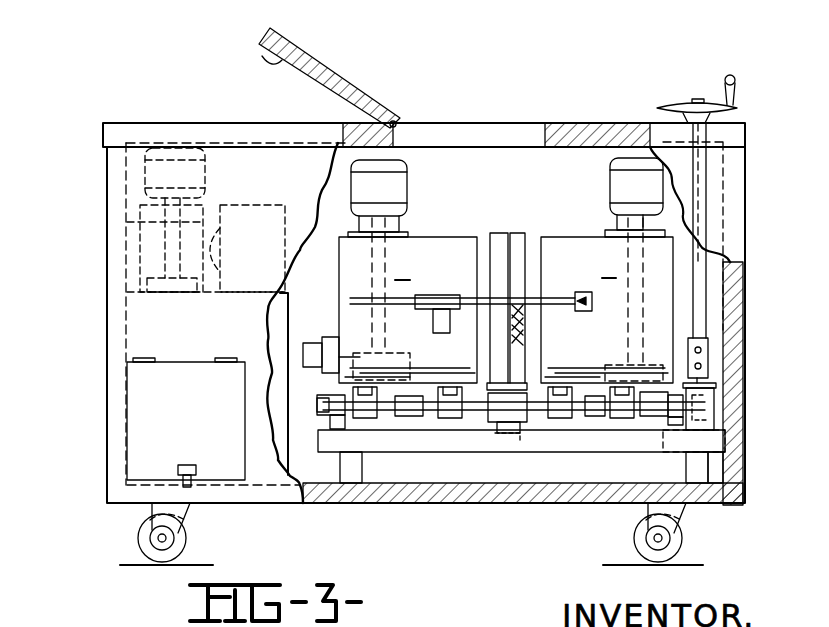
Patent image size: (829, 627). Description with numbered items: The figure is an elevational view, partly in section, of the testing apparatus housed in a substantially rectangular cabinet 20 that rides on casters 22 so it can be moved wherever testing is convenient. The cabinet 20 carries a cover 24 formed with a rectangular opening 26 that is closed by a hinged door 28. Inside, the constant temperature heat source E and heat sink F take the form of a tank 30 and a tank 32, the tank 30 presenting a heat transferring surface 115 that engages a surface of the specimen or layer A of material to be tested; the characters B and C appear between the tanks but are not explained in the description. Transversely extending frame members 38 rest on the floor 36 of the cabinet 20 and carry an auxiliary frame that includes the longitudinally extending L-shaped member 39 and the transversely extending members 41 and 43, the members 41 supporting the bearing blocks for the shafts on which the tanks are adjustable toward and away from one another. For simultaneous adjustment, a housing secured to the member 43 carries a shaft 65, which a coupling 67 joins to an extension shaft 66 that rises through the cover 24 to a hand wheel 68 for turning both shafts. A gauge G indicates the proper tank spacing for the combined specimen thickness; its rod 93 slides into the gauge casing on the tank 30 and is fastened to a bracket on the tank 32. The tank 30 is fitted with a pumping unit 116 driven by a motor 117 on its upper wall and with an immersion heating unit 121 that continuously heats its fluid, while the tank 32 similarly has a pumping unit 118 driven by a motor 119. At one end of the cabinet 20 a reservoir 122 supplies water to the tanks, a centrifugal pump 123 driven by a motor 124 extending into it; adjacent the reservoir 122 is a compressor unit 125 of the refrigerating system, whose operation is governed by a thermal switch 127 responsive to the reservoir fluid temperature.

The housing or cabinet 20 is at (735, 274).
The casters 22 is at (183, 540).
The cover or closure 24 is at (600, 122).
The rectangular opening 26 is at (530, 98).
The hinged cover or door 28 is at (305, 55).
The tank or receptacle 30 is at (431, 240).
The tank or receptacle 32 is at (592, 240).
The lower wall or floor 36 is at (452, 498).
The transversely extending frame members 38 is at (352, 468).
The longitudinally extending L-shaped member 39 is at (590, 447).
The transversely extending member 41 is at (322, 438).
The transversely extending member 43 is at (722, 460).
The shaft 65 is at (705, 385).
The extension shaft 66 is at (699, 243).
The coupling 67 is at (706, 350).
The hand wheel 68 is at (670, 107).
The rod 93 is at (556, 304).
The heat transferring surface or wall 115 is at (481, 238).
The pumping unit 116 is at (411, 364).
The motor 117 is at (403, 176).
The pumping unit 118 is at (614, 358).
The motor 119 is at (616, 172).
The heating unit 121 is at (358, 345).
The reservoir 122 is at (140, 250).
The pump 123 is at (160, 222).
The motor 124 is at (205, 167).
The compressor unit 125 is at (133, 305).
The thermal switch 127 is at (545, 238).
The specimen or layer of material A is at (493, 233).
The column B is at (523, 233).
The column C is at (508, 233).
The heat source E is at (404, 265).
The heat sink F is at (611, 263).
The gauge G is at (458, 282).